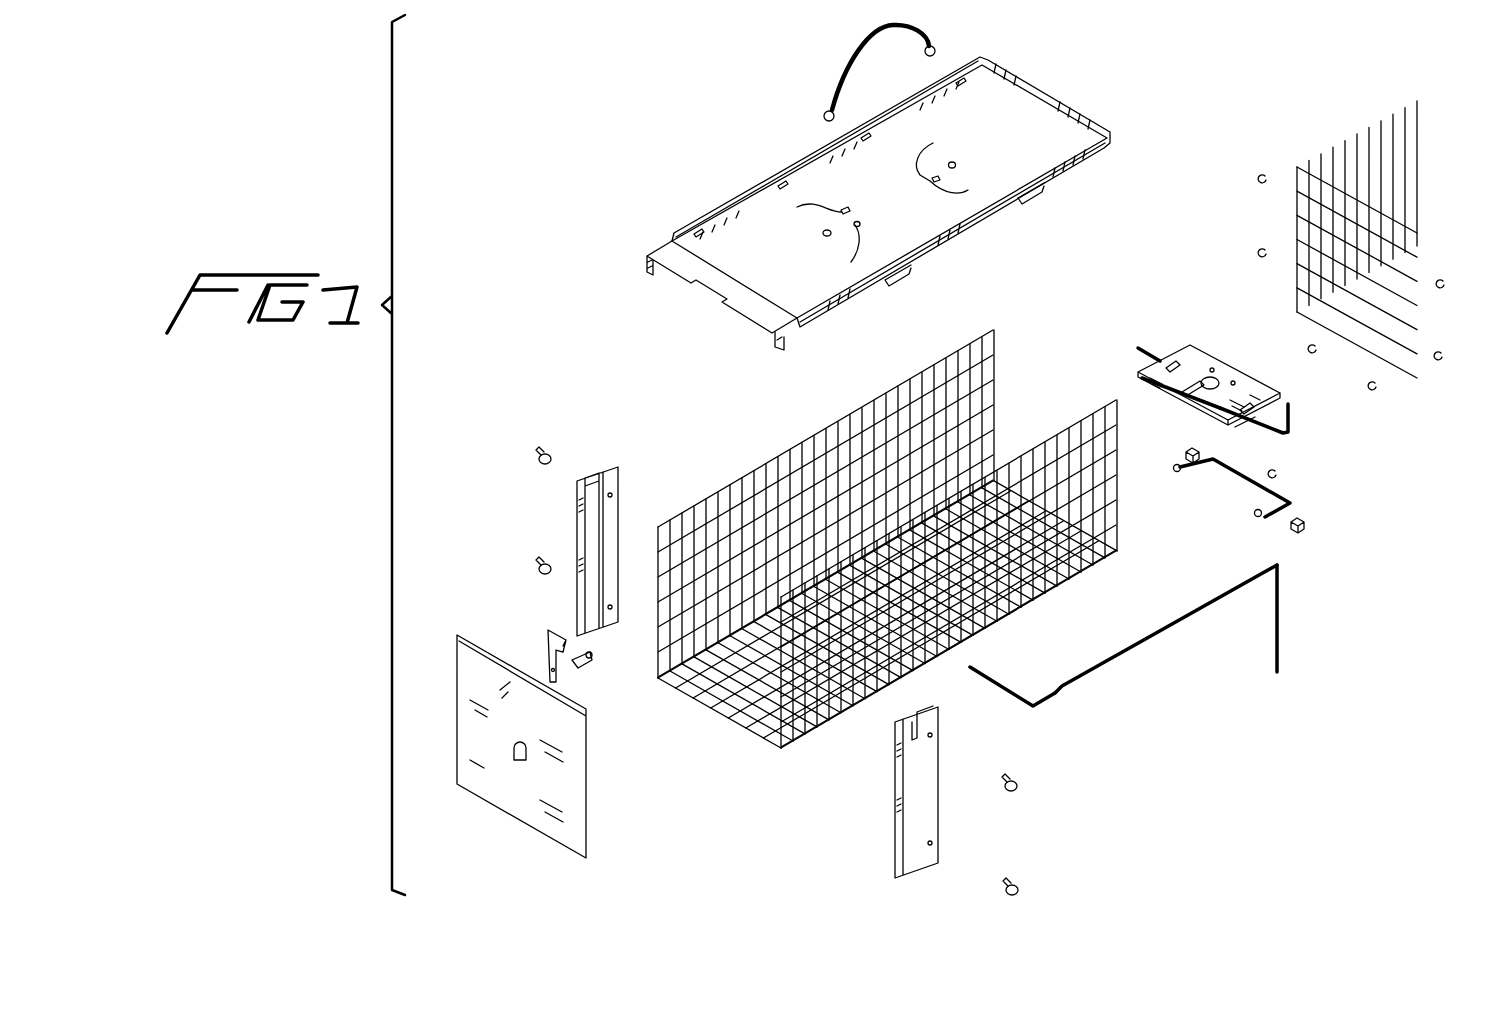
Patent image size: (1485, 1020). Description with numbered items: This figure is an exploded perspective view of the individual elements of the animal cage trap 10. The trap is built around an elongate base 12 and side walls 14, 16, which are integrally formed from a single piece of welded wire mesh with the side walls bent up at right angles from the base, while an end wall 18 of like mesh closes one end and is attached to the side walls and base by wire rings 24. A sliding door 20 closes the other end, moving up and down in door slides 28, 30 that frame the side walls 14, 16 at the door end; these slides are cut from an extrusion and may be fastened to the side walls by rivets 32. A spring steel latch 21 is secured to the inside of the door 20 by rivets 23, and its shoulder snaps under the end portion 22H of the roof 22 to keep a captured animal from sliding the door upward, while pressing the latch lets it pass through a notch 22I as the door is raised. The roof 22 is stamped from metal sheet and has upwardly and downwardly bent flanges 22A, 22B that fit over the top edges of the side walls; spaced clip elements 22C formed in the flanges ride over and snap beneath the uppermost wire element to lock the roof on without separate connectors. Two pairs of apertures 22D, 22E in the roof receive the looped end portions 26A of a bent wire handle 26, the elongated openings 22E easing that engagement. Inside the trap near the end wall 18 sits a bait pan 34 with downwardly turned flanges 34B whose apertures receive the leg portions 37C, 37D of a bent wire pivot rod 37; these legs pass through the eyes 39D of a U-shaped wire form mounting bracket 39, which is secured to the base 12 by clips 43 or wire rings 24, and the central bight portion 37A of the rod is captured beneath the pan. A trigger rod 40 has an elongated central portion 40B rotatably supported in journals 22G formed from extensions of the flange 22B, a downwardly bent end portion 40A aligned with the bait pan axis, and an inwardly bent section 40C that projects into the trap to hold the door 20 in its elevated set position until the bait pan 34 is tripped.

The animal cage trap 10 is at (556, 123).
The elongate base 12 is at (887, 579).
The side wall 14 is at (772, 464).
The side wall 16 is at (1052, 444).
The end wall 18 is at (1364, 200).
The sliding door 20 is at (520, 815).
The spring steel latch 21 is at (556, 630).
The roof 22 is at (879, 223).
The upwardly bent flange 22A is at (806, 162).
The downwardly bent flange 22B is at (835, 300).
The clip elements 22C is at (872, 130).
The apertures 22D is at (852, 240).
The elongated openings 22E is at (838, 215).
The journals 22G is at (1042, 198).
The end portion of the roof 22H is at (784, 348).
The notch 22I is at (720, 292).
The rivets 23 is at (585, 672).
The wire rings 24 is at (1262, 176).
The bent wire handle 26 is at (885, 70).
The looped end portions 26A is at (938, 48).
The door slide 28 is at (627, 468).
The door slide 30 is at (896, 815).
The rivets 32 is at (545, 450).
The bait pan 34 is at (1249, 368).
The downwardly turned flanges 34B is at (1252, 432).
The bent wire pivot rod 37 is at (1253, 373).
The central bight portion 37A is at (1163, 408).
The leg portion 37C is at (1160, 355).
The leg portion 37D is at (1290, 400).
The wire form mounting bracket 39 is at (1216, 508).
The eyes 39D is at (1231, 534).
The trigger rod 40 is at (1175, 645).
The downwardly bent end portion 40A is at (1280, 628).
The elongated central portion 40B is at (1166, 622).
The inwardly bent section 40C is at (1062, 682).
The clips 43 is at (1190, 453).